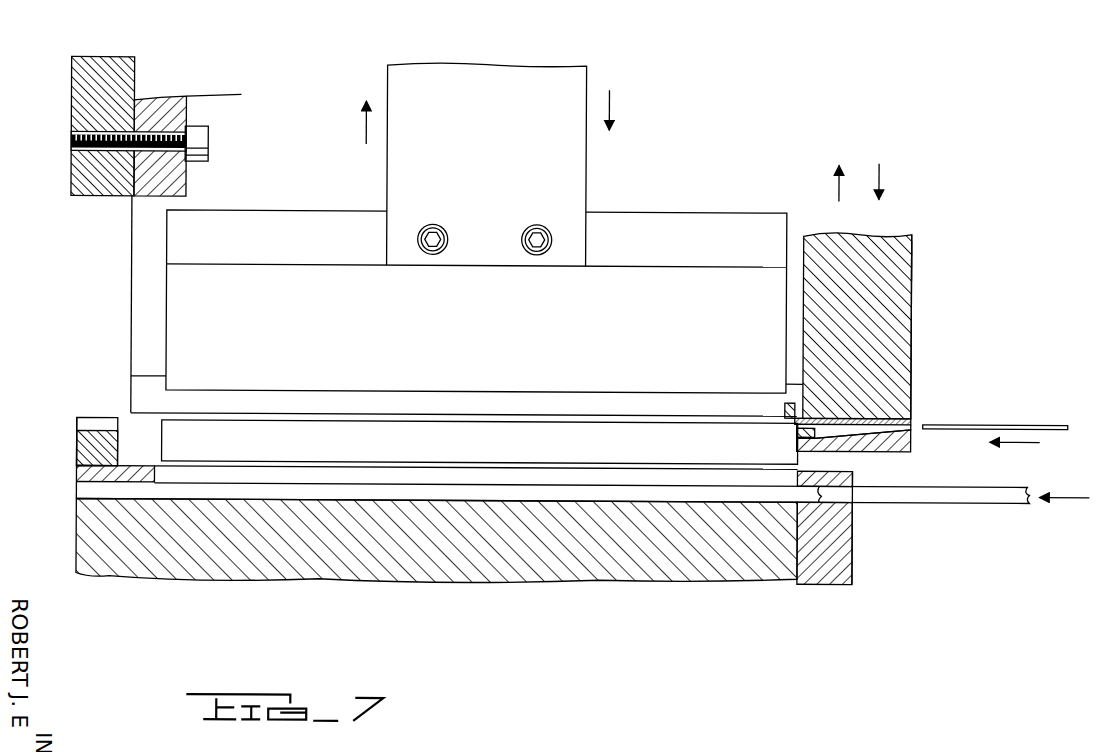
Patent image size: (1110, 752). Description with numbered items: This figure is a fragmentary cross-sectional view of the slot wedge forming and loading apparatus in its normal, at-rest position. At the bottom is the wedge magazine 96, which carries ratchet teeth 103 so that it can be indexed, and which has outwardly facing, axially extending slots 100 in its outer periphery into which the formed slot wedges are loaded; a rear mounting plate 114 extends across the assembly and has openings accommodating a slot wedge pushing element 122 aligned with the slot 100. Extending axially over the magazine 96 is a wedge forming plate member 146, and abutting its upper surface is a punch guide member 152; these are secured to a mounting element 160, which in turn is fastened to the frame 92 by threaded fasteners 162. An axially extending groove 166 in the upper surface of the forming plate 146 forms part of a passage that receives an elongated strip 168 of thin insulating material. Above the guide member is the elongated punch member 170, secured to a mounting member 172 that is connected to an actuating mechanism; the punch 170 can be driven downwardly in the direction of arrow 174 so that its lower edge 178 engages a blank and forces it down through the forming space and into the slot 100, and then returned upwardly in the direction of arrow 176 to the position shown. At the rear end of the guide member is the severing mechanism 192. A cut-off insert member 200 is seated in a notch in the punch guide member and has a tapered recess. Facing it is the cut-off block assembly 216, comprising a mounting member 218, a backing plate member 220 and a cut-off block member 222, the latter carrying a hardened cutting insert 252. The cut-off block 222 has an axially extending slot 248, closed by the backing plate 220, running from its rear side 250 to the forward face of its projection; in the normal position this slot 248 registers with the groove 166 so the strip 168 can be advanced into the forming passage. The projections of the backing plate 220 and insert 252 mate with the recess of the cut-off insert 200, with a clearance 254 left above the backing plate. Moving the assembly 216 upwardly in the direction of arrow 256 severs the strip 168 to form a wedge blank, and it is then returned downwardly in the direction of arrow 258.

The frame 92 is at (156, 113).
The threaded fasteners 162 is at (197, 128).
The mounting element 160 is at (138, 265).
The punch guide member 152 is at (133, 390).
The punch member 170 is at (693, 225).
The lower edge of the punch 178 is at (650, 392).
The mounting member 172 is at (567, 165).
The arrow indicating upward punch movement 176 is at (360, 116).
The arrow indicating downward punch movement 174 is at (612, 97).
The arrow indicating upward movement of cut-off block assembly 256 is at (835, 162).
The arrow indicating downward movement of cut-off block assembly 258 is at (897, 150).
The mounting member 218 is at (900, 262).
The cut-off block assembly 216 is at (900, 355).
The severing mechanism 192 is at (927, 268).
The backing plate member 220 is at (905, 420).
The cut-off insert member 200 is at (785, 410).
The slot in cut-off block 248 is at (873, 431).
The hardened insert 252 is at (795, 429).
The cut-off block member 222 is at (905, 447).
The clearance 254 is at (797, 382).
The axially extending groove 166 is at (500, 423).
The wedge forming plate member 146 is at (336, 456).
The ratchet teeth 103 is at (78, 445).
The slot 100 is at (440, 490).
The slot wedge pushing element 122 is at (1010, 500).
The wedge magazine 96 is at (85, 525).
The rear mounting plate 114 is at (840, 538).
The elongated strip of insulating material 168 is at (1010, 425).
The rear side of cut-off block 250 is at (988, 442).